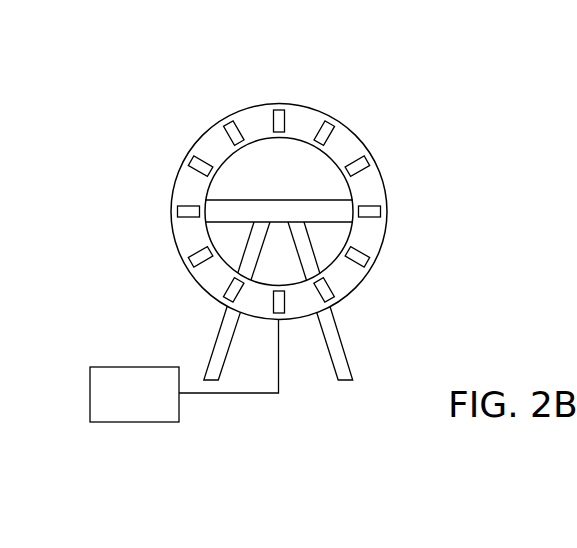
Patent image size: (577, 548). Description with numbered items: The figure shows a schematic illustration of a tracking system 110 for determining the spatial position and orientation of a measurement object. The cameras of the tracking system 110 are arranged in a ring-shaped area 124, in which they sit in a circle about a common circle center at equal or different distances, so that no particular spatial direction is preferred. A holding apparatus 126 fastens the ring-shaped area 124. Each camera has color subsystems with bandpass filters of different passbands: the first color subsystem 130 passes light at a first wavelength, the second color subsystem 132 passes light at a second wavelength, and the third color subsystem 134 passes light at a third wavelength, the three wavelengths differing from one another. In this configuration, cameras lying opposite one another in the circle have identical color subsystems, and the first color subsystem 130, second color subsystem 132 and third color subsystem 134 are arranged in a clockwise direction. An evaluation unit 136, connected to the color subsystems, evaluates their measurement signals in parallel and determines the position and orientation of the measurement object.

The tracking system 110 is at (477, 122).
The ring-shaped area 124 is at (377, 238).
The first color subsystem 130 is at (331, 117).
The second color subsystem 132 is at (378, 157).
The third color subsystem 134 is at (380, 209).
The holding apparatus 126 is at (345, 347).
The evaluation unit 136 is at (150, 405).